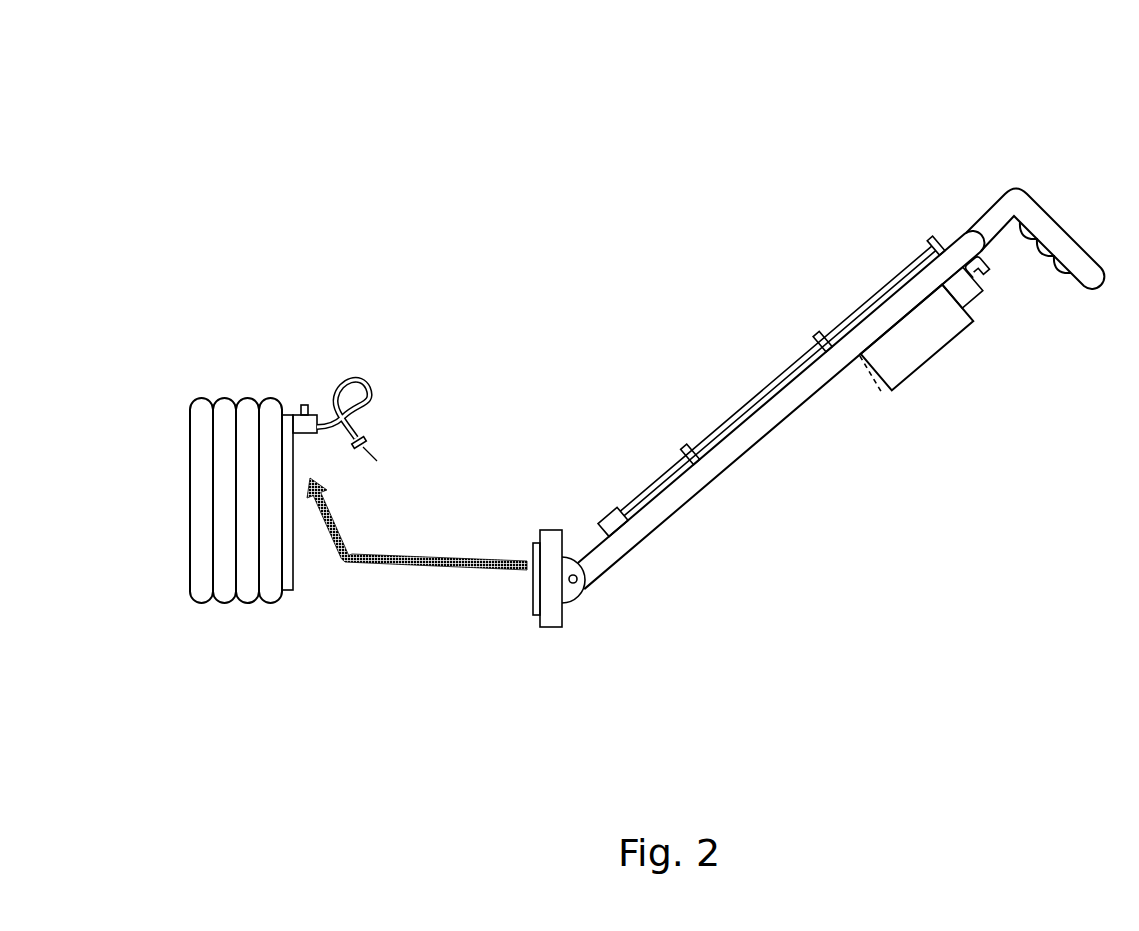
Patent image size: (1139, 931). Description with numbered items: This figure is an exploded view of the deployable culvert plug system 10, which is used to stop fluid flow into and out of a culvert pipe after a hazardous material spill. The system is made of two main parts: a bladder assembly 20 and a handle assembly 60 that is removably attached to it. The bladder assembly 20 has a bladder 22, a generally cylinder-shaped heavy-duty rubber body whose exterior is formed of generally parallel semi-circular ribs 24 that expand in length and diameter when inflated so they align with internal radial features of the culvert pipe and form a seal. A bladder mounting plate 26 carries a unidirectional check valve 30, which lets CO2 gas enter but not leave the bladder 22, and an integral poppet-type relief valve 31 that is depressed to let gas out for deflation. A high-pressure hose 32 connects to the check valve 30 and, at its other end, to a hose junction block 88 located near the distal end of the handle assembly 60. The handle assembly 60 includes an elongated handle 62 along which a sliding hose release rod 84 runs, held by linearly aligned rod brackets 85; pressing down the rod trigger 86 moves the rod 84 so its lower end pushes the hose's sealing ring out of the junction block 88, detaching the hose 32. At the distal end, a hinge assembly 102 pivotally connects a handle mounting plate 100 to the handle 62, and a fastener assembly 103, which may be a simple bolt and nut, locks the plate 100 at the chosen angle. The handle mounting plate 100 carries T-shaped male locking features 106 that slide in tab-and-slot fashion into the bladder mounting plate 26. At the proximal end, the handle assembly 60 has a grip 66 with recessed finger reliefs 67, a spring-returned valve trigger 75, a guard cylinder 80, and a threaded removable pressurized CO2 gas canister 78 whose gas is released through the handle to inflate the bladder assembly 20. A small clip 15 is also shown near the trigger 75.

The deployable culvert plug system 10 is at (586, 220).
The clip 15 is at (993, 283).
The bladder assembly 20 is at (213, 368).
The bladder 22 is at (190, 518).
The ribs 24 is at (205, 588).
The bladder mounting plate 26 is at (287, 568).
The check valve 30 is at (311, 419).
The relief valve 31 is at (301, 403).
The high-pressure hose 32 is at (368, 391).
The handle assembly 60 is at (819, 404).
The handle 62 is at (638, 545).
The grip 66 is at (1015, 198).
The finger reliefs 67 is at (1078, 272).
The valve trigger 75 is at (982, 293).
The gas canister 78 is at (878, 398).
The guard cylinder 80 is at (923, 340).
The hose release rod 84 is at (878, 292).
The rod brackets 85 is at (812, 335).
The rod trigger 86 is at (930, 237).
The hose junction block 88 is at (603, 513).
The handle mounting plate 100 is at (548, 540).
The hinge assembly 102 is at (578, 600).
The fastener assembly 103 is at (580, 582).
The male locking features 106 is at (535, 603).